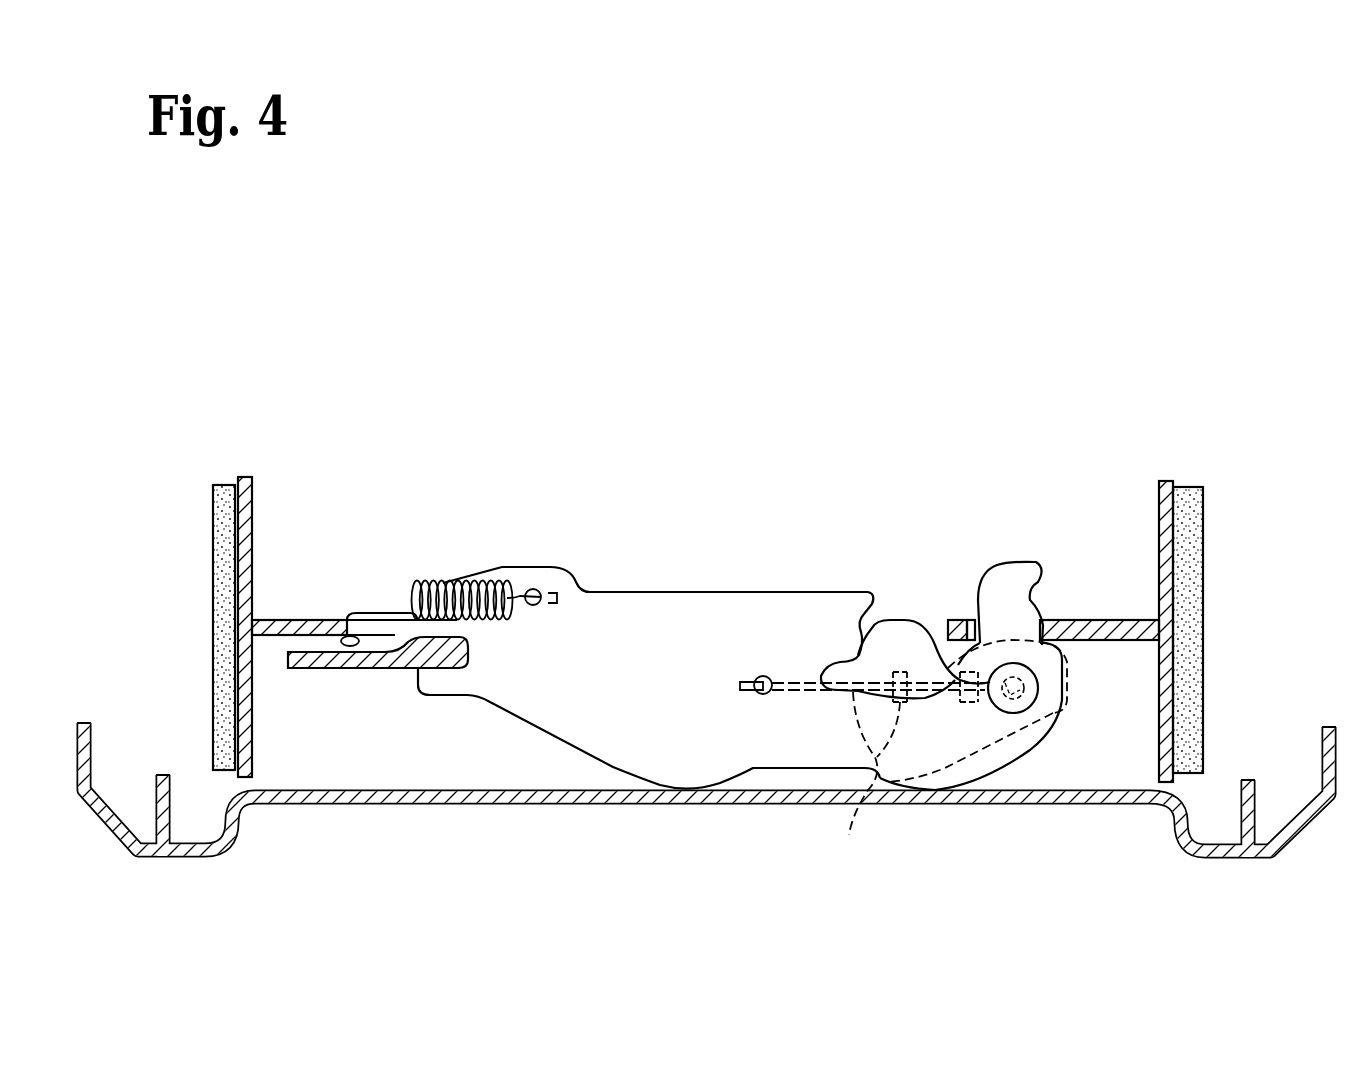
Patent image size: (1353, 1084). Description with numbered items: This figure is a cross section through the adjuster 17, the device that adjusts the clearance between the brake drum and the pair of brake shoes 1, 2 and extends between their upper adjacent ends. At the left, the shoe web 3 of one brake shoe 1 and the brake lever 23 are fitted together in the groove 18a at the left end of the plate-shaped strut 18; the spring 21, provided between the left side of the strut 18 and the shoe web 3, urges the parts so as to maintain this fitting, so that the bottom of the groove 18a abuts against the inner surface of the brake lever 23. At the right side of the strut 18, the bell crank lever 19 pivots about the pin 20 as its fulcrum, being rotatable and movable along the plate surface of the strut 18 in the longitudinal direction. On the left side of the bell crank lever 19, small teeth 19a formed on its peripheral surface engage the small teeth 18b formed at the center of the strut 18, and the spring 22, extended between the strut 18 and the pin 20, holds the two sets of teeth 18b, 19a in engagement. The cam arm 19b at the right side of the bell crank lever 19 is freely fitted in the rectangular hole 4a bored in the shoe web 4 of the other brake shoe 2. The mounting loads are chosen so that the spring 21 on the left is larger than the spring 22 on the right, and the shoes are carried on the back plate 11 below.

The brake shoe 1 is at (212, 582).
The brake shoe 2 is at (1208, 596).
The shoe web 3 is at (320, 620).
The shoe web 4 is at (1110, 620).
The rectangular hole 4a is at (978, 620).
The base 11 is at (605, 804).
The adjuster 17 is at (673, 592).
The strut 18 is at (735, 615).
The groove 18a is at (440, 598).
The small teeth 18b is at (860, 650).
The bell crank lever 19 is at (920, 627).
The small teeth 19a is at (856, 658).
The cam arm 19b is at (1029, 598).
The pin 20 is at (1018, 702).
The spring 21 is at (495, 583).
The spring 22 is at (849, 835).
The brake lever 23 is at (340, 668).